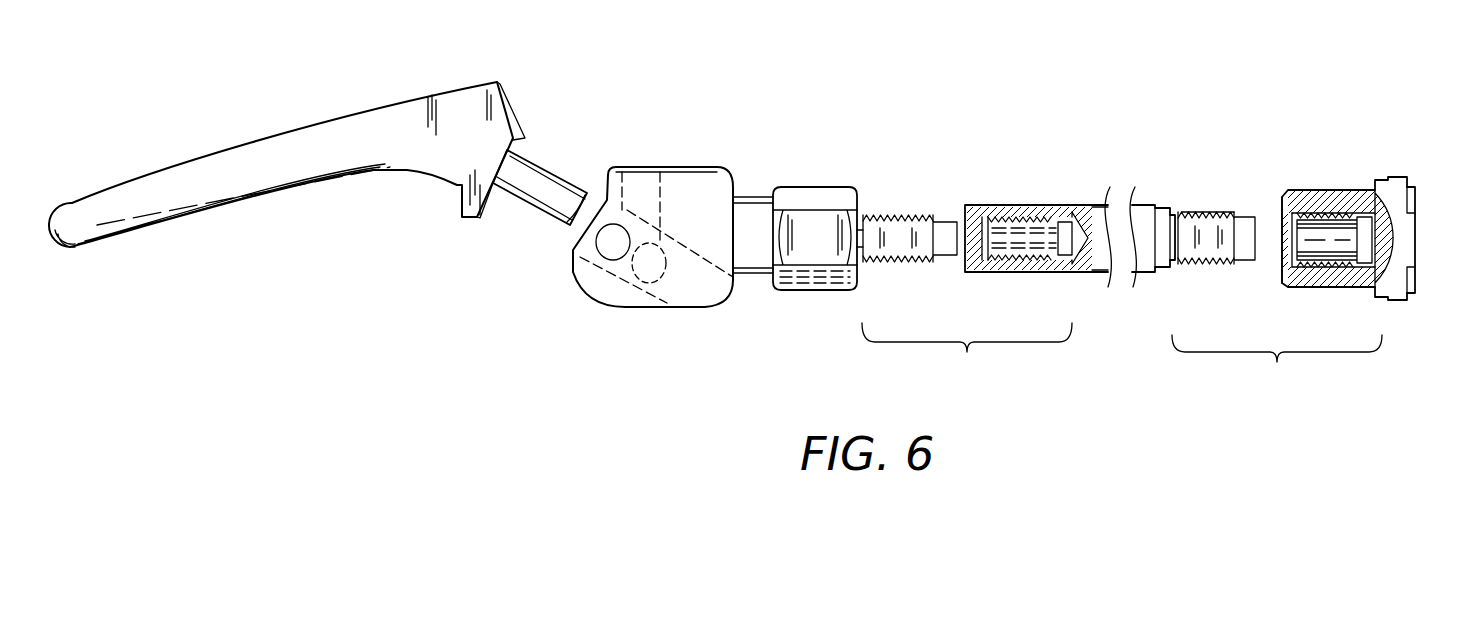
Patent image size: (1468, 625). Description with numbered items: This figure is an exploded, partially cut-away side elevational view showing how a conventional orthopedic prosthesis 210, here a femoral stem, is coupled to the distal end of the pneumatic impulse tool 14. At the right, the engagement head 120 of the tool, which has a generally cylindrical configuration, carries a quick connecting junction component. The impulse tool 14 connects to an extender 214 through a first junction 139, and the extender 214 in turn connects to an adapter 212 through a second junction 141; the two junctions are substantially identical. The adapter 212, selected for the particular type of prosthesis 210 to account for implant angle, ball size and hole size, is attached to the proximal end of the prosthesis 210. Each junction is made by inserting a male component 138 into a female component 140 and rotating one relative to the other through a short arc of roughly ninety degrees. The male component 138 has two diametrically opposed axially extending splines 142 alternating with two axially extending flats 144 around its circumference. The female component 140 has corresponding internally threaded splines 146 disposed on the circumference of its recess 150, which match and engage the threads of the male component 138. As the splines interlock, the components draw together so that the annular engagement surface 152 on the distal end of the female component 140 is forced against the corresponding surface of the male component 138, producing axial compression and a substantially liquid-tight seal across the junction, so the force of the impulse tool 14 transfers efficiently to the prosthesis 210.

The orthopedic prosthesis 210 is at (450, 117).
The adapter 212 is at (690, 187).
The male component 138 is at (892, 220).
The female component 140 is at (1026, 236).
The second junction 141 is at (1018, 285).
The splines 142 is at (1187, 268).
The extender 214 is at (1088, 210).
The flats 144 is at (1210, 211).
The first junction 139 is at (1277, 365).
The engagement head 120 is at (1347, 195).
The recess 150 is at (1280, 224).
The annular engagement surface 152 is at (1276, 212).
The splines 146 is at (1332, 274).
The pneumatic impulse tool 14 is at (1425, 313).